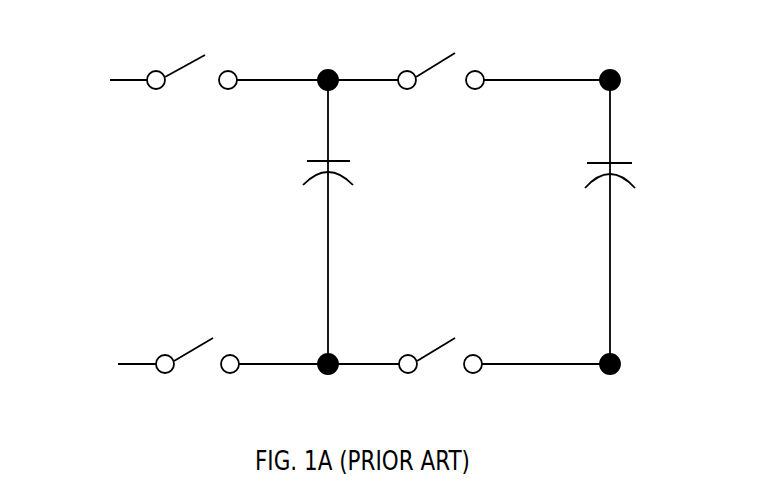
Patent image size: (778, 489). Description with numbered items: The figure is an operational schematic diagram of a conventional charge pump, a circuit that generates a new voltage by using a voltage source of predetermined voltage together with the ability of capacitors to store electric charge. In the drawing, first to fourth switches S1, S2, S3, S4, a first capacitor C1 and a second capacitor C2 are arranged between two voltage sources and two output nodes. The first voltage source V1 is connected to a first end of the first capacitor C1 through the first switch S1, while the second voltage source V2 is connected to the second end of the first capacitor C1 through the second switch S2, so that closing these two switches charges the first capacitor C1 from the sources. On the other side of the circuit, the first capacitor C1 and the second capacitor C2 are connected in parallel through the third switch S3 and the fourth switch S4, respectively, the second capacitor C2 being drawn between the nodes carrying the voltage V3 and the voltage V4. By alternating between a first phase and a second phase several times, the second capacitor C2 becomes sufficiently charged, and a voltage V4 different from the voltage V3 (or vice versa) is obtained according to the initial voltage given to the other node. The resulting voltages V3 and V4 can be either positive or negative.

The first voltage source V1 is at (107, 82).
The second voltage source V2 is at (112, 366).
The voltage V3 is at (631, 70).
The voltage V4 is at (632, 384).
The first switch S1 is at (192, 51).
The second switch S2 is at (197, 379).
The third switch S3 is at (441, 50).
The fourth switch S4 is at (440, 378).
The first capacitor C1 is at (305, 222).
The second capacitor C2 is at (590, 222).